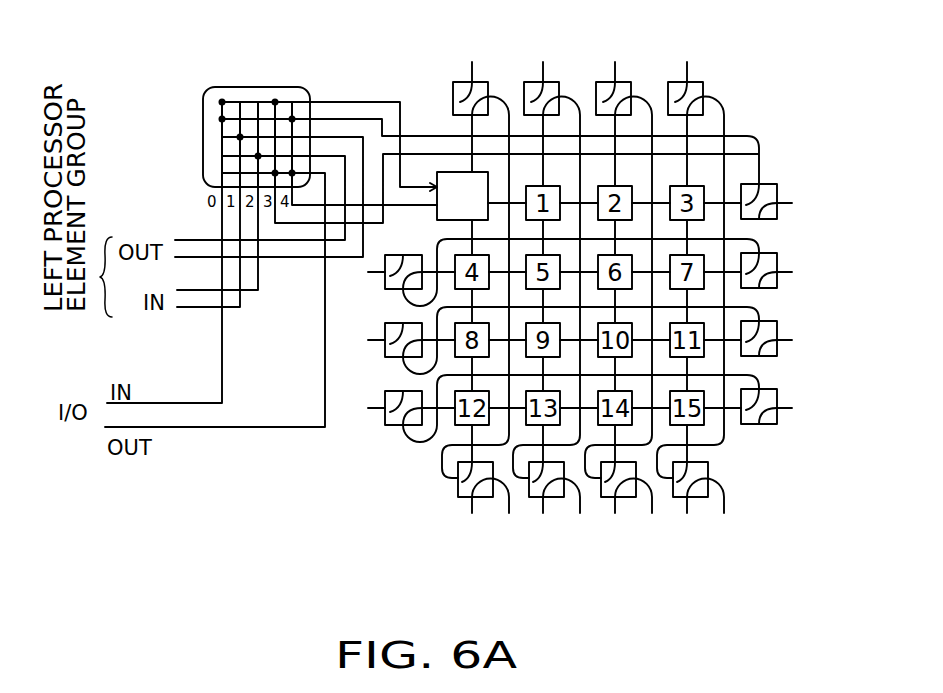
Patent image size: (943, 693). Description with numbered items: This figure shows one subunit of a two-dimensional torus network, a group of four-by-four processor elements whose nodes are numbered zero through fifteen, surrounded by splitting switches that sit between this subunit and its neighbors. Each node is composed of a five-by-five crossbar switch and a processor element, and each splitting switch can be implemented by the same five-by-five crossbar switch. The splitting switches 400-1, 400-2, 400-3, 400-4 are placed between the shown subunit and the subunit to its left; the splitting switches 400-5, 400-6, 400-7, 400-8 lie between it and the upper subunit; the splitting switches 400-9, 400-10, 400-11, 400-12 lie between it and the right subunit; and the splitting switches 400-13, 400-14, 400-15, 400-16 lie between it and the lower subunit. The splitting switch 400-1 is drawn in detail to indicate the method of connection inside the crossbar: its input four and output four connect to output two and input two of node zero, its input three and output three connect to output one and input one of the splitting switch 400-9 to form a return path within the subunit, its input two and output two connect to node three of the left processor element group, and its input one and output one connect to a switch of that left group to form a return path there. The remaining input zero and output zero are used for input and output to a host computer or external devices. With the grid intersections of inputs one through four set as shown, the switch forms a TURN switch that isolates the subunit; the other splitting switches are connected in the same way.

The splitting switch 400-1 is at (284, 88).
The splitting switch 400-2 is at (437, 221).
The splitting switch 400-3 is at (389, 289).
The splitting switch 400-4 is at (389, 357).
The splitting switch 400-5 is at (485, 82).
The splitting switch 400-6 is at (556, 82).
The splitting switch 400-7 is at (628, 82).
The splitting switch 400-8 is at (703, 82).
The splitting switch 400-9 is at (777, 193).
The splitting switch 400-10 is at (777, 261).
The splitting switch 400-11 is at (777, 329).
The splitting switch 400-12 is at (777, 398).
The splitting switch 400-13 is at (466, 498).
The splitting switch 400-14 is at (540, 498).
The splitting switch 400-15 is at (613, 498).
The splitting switch 400-16 is at (678, 498).